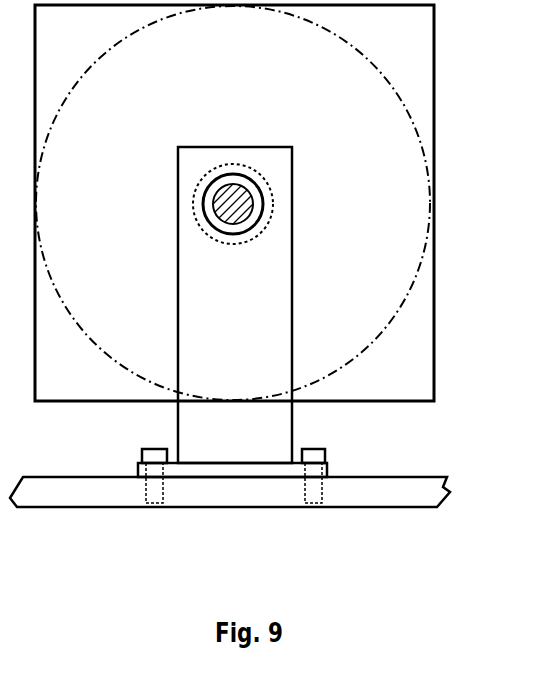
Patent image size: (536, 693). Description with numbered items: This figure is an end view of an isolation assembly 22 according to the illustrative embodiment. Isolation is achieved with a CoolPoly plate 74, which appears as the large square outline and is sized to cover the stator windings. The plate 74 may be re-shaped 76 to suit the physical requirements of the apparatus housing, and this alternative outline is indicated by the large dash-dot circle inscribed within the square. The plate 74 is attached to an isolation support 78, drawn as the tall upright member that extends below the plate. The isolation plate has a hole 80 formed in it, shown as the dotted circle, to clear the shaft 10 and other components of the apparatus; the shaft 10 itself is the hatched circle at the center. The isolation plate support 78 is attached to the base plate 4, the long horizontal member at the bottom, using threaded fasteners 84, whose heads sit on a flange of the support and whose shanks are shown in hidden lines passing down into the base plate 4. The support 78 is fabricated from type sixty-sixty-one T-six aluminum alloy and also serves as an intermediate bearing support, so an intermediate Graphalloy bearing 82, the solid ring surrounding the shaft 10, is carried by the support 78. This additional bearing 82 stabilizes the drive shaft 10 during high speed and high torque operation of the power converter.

The base plate 4 is at (347, 507).
The shaft 10 is at (252, 218).
The CoolPoly plate 74 is at (434, 52).
The re-shaped 76 is at (413, 116).
The isolation support 78 is at (292, 432).
The hole 80 is at (200, 228).
The intermediate Graphalloy bearing 82 is at (203, 183).
The threaded fasteners 84 is at (147, 449).
The isolation assembly 22 is at (87, 581).